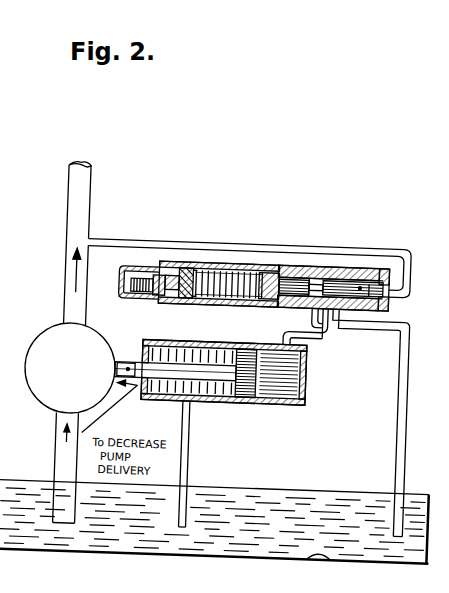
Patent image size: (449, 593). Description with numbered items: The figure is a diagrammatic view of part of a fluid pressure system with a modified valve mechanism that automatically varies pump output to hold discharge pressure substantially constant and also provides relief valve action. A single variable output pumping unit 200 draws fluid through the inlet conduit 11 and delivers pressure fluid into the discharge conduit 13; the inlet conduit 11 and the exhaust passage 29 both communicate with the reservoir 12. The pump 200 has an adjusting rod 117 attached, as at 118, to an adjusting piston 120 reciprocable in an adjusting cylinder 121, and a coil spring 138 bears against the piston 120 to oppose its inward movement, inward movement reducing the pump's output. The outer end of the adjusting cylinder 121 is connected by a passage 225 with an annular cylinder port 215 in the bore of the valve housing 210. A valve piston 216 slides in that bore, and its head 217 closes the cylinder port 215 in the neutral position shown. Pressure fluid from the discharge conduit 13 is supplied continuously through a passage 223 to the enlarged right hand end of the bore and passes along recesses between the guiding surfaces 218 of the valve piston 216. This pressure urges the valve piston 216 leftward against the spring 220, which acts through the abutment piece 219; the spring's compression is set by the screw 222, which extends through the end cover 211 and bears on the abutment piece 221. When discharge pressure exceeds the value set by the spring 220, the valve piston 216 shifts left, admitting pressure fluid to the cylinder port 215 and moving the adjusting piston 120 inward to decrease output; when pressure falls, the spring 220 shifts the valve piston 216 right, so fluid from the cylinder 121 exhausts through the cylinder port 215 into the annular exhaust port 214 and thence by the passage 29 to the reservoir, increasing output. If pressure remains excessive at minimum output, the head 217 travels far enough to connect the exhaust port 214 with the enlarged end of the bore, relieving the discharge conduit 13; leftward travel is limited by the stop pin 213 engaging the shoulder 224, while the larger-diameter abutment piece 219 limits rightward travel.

The inlet conduit 11 is at (61, 462).
The reservoir 12 is at (328, 546).
The discharge conduit 13 is at (78, 212).
The exhaust passage 29 is at (399, 451).
The adjusting rod 117 is at (119, 358).
The attachment of adjusting rod to adjusting piston 118 is at (128, 360).
The adjusting piston 120 is at (251, 399).
The adjusting cylinder 121 is at (307, 386).
The coil spring 138 is at (248, 392).
The variable output pumping unit 200 is at (44, 402).
The valve housing 210 is at (288, 244).
The end cover 211 is at (201, 263).
The stop pin 213 is at (395, 230).
The annular exhaust port 214 is at (298, 302).
The annular cylinder port 215 is at (331, 301).
The valve piston 216 is at (357, 278).
The head 217 is at (327, 273).
The guiding surfaces 218 is at (303, 276).
The abutment piece 219 is at (256, 303).
The spring 220 is at (236, 259).
The abutment piece 221 is at (196, 301).
The screw 222 is at (185, 296).
The passage 223 is at (214, 245).
The shoulder 224 is at (389, 309).
The passage 225 is at (326, 329).